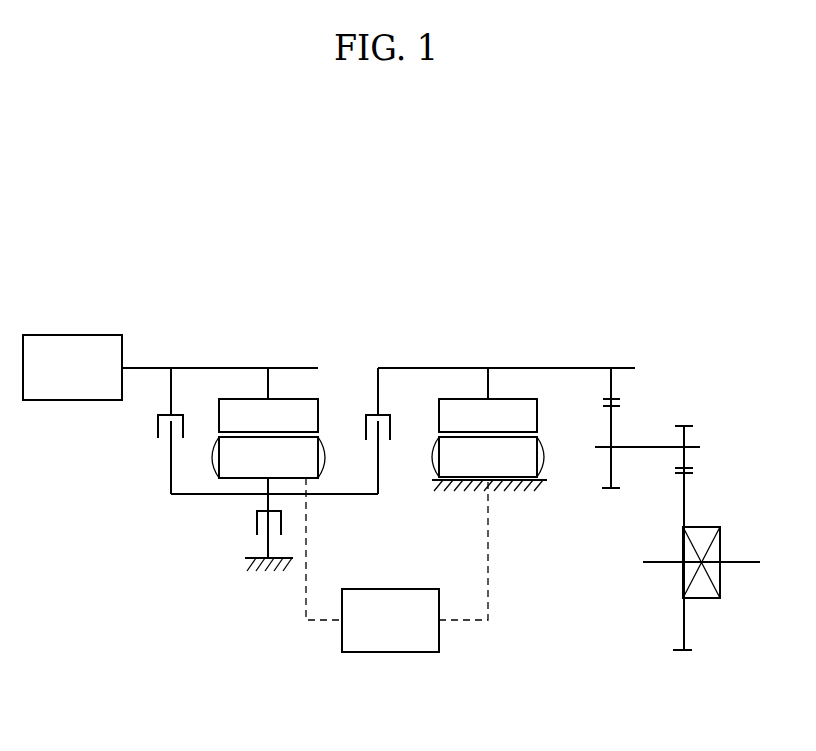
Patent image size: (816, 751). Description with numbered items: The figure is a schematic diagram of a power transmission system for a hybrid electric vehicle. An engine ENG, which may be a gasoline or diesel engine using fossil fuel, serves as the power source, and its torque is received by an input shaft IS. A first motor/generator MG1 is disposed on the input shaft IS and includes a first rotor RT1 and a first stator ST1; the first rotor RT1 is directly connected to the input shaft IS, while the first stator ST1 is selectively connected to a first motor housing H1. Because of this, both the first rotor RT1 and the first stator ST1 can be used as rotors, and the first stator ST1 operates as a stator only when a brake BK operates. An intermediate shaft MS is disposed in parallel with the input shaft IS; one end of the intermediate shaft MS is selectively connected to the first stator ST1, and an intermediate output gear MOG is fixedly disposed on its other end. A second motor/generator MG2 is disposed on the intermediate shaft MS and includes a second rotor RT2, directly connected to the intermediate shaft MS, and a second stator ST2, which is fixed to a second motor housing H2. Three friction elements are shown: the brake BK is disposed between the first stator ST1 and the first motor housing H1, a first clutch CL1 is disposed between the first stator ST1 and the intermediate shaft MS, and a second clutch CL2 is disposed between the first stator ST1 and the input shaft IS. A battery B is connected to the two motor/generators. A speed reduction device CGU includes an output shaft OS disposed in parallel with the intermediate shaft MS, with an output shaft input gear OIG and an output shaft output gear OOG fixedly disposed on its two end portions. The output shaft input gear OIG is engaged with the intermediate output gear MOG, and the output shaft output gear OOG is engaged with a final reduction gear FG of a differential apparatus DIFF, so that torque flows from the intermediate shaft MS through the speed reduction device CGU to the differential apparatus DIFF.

The engine ENG is at (72, 367).
The input shaft IS is at (218, 365).
The intermediate shaft MS is at (520, 365).
The second clutch CL2 is at (155, 447).
The first rotor RT1 is at (268, 415).
The first stator ST1 is at (268, 457).
The first motor/generator MG1 is at (212, 475).
The brake BK is at (250, 533).
The first motor housing H1 is at (270, 568).
The battery B is at (415, 564).
The first clutch CL1 is at (390, 448).
The second rotor RT2 is at (488, 415).
The second stator ST2 is at (488, 457).
The second motor housing H2 is at (508, 487).
The second motor/generator MG2 is at (550, 465).
The output shaft input gear OIG is at (608, 422).
The intermediate output gear MOG is at (613, 382).
The speed reduction device CGU is at (642, 428).
The output shaft output gear OOG is at (688, 437).
The output shaft OS is at (648, 450).
The final reduction gear FG is at (685, 497).
The differential apparatus DIFF is at (703, 588).